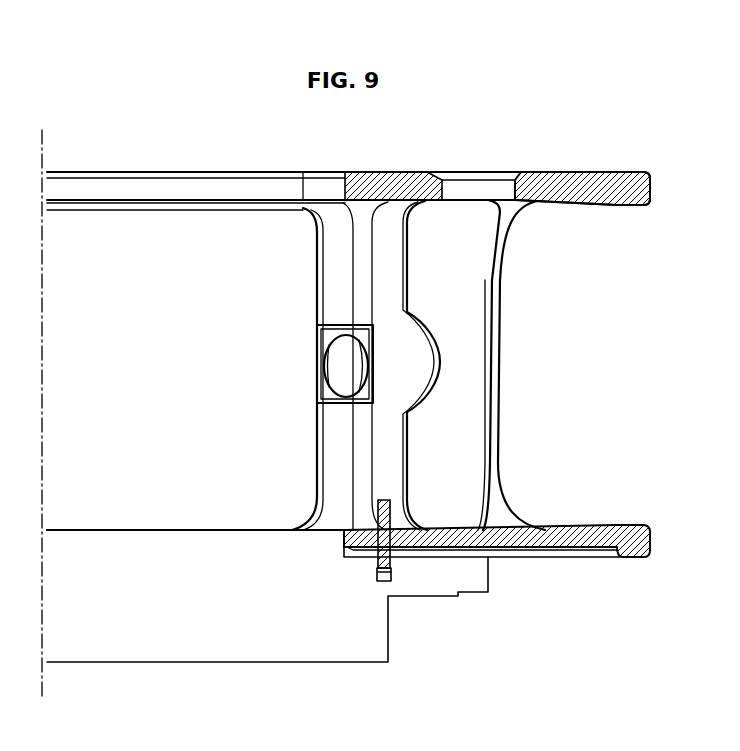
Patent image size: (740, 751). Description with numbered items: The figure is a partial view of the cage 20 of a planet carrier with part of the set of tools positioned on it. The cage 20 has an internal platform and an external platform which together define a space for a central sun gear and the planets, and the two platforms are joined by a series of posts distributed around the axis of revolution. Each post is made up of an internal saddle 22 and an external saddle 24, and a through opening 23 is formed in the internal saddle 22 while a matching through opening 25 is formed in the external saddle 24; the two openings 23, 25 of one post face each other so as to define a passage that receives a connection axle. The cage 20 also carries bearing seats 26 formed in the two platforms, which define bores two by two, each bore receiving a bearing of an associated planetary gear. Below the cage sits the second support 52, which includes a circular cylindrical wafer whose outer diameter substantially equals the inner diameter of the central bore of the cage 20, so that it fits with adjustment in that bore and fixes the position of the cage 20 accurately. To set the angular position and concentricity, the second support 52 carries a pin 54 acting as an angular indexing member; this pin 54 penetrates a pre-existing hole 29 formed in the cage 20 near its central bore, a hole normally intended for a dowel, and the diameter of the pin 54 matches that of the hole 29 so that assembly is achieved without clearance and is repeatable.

The cage 20 is at (486, 119).
The bearing seat 26 is at (531, 173).
The internal saddle 22 is at (472, 279).
The external saddle 24 is at (334, 280).
The through opening 23 is at (430, 363).
The through opening 25 is at (343, 366).
The second support 52 is at (158, 558).
The pin 54 is at (389, 567).
The hole 29 is at (389, 577).